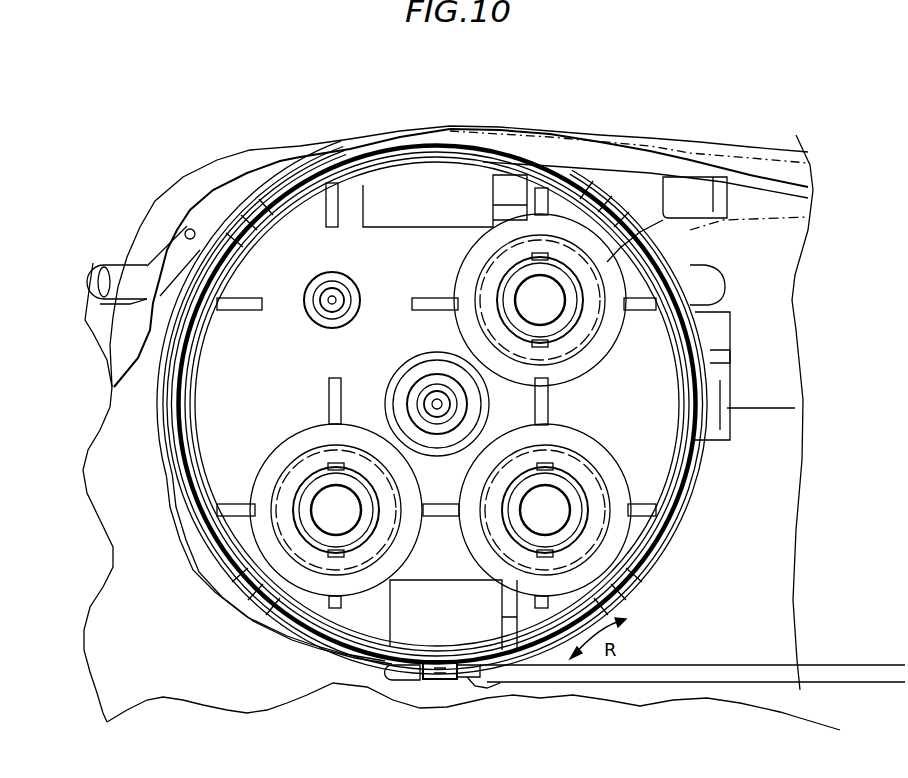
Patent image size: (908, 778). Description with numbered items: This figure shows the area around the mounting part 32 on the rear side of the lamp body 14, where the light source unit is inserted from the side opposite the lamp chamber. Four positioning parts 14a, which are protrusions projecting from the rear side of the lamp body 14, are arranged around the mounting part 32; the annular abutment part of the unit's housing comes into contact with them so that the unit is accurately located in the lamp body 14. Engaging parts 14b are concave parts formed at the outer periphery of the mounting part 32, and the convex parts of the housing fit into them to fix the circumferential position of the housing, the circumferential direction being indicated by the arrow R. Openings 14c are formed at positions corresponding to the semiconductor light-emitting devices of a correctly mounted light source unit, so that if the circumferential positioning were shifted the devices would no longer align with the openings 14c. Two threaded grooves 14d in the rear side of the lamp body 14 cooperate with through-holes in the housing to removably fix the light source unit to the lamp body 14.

The lamp body 14 is at (748, 457).
The mounting part 32 is at (607, 389).
The positioning parts 14a is at (260, 213).
The engaging parts 14b is at (596, 182).
The openings 14c is at (540, 300).
The threaded grooves 14d is at (332, 298).